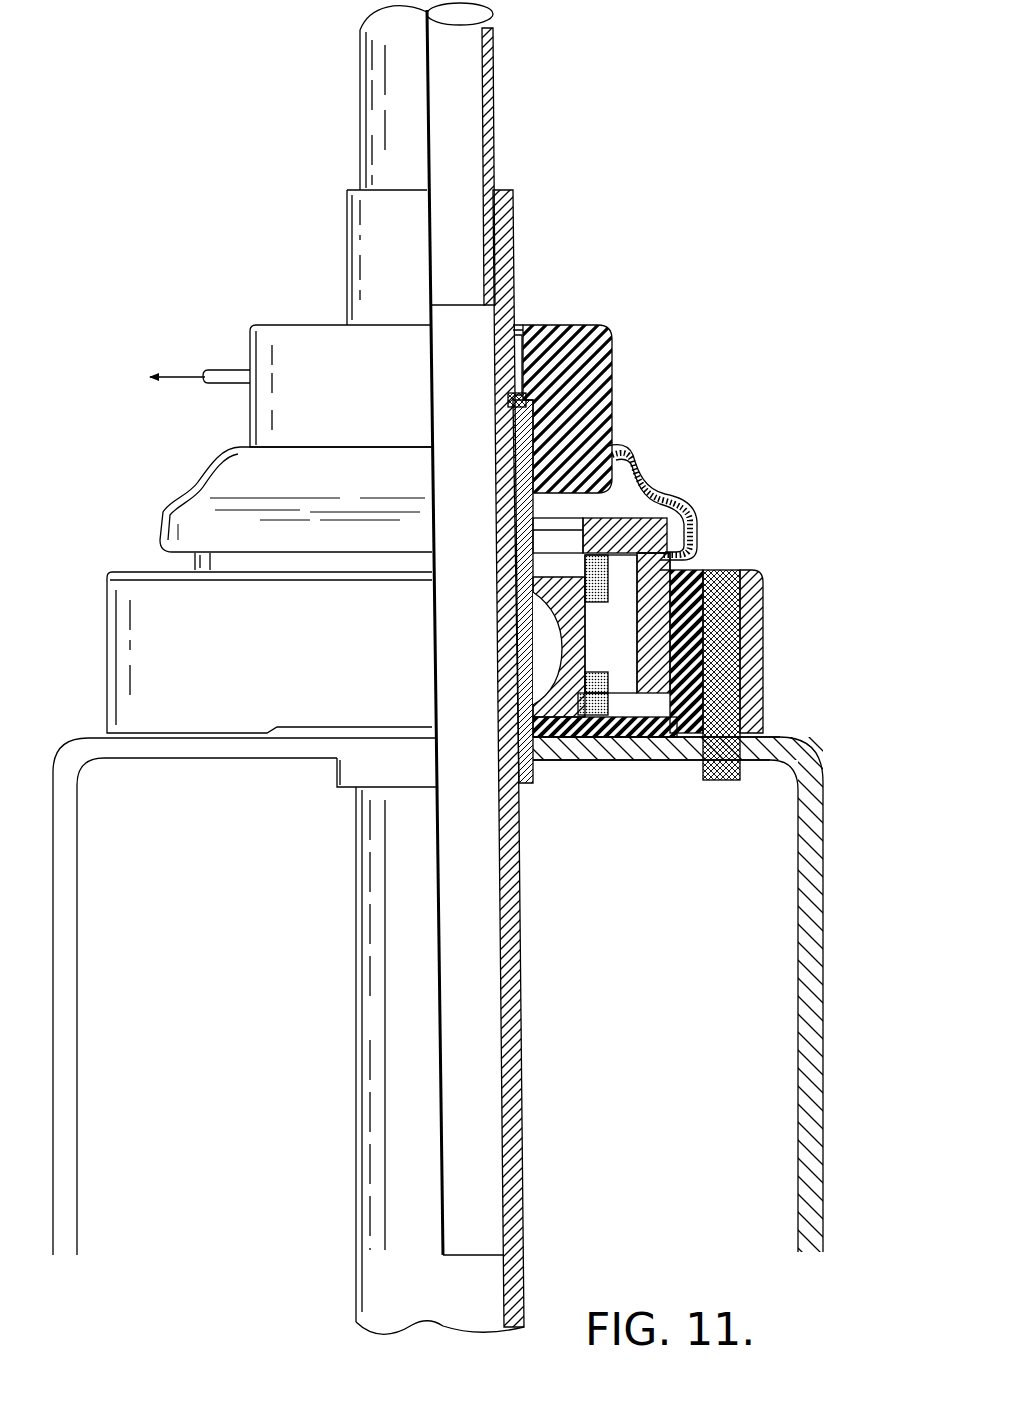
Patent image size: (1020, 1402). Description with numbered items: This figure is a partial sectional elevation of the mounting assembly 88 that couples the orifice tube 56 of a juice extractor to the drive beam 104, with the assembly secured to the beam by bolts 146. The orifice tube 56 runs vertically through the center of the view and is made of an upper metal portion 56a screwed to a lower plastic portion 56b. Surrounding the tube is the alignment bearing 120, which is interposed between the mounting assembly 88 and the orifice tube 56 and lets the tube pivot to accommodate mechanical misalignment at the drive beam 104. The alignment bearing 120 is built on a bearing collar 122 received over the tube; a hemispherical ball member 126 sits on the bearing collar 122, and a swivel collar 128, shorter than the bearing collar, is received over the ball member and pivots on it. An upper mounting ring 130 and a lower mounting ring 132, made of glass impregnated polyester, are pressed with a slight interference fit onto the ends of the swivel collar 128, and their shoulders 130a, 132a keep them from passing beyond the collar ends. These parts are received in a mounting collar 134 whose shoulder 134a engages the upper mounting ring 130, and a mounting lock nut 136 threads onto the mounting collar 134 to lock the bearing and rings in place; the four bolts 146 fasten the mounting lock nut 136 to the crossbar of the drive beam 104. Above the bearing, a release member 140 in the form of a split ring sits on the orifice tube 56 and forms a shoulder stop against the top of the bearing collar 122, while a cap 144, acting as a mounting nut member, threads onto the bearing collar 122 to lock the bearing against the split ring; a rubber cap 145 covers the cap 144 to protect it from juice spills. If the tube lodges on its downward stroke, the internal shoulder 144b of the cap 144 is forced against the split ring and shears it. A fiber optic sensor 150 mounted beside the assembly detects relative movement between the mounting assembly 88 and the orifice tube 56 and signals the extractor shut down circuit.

The orifice tube 56 is at (508, 178).
The upper metal portion 56a is at (362, 86).
The lower plastic portion 56b is at (348, 234).
The mounting assembly 88 is at (742, 550).
The drive beam 104 is at (816, 901).
The alignment bearing 120 is at (653, 480).
The bearing collar 122 is at (545, 433).
The hemispherical ball member 126 is at (545, 702).
The swivel collar 128 is at (598, 716).
The upper mounting ring 130 is at (670, 556).
The shoulder 130a is at (672, 566).
The lower mounting ring 132 is at (757, 635).
The shoulder 132a is at (683, 762).
The mounting collar 134 is at (195, 562).
The shoulder 134a is at (664, 492).
The mounting lock nut 136 is at (163, 633).
The release member 140 is at (528, 400).
The cap 144 is at (580, 324).
The internal shoulder 144b is at (526, 325).
The rubber cap 145 is at (212, 486).
The bolts 146 is at (746, 571).
The fiber optic sensor 150 is at (208, 371).